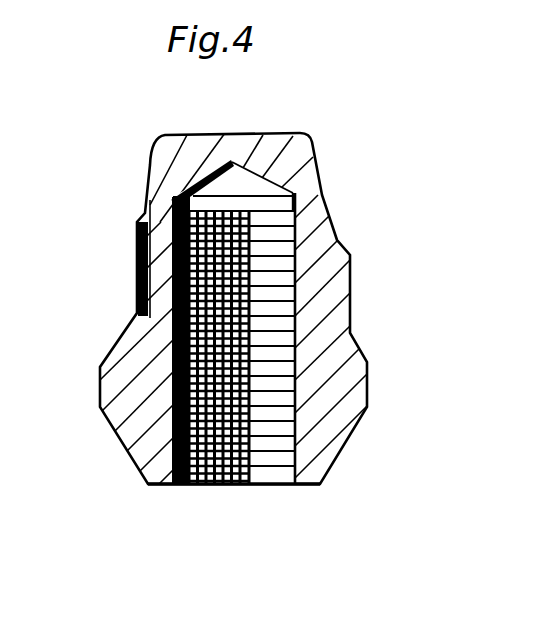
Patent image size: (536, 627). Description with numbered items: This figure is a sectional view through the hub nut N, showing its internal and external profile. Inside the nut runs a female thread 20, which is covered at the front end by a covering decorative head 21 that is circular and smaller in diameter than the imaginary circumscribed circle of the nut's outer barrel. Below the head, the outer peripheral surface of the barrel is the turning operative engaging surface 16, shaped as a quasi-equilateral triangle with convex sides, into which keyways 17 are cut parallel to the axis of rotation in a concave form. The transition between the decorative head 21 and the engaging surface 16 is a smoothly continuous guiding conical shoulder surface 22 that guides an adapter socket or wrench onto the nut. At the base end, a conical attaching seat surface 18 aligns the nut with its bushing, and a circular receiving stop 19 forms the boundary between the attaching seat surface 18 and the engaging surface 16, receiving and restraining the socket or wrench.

The hub nut N is at (313, 135).
The turning operative engaging surface 16 is at (353, 272).
The keyways 17 is at (137, 243).
The attaching seat surface 18 is at (353, 427).
The receiving stop 19 is at (98, 382).
The female thread 20 is at (270, 473).
The covering decorative head 21 is at (233, 142).
The guiding conical shoulder surface 22 is at (323, 203).